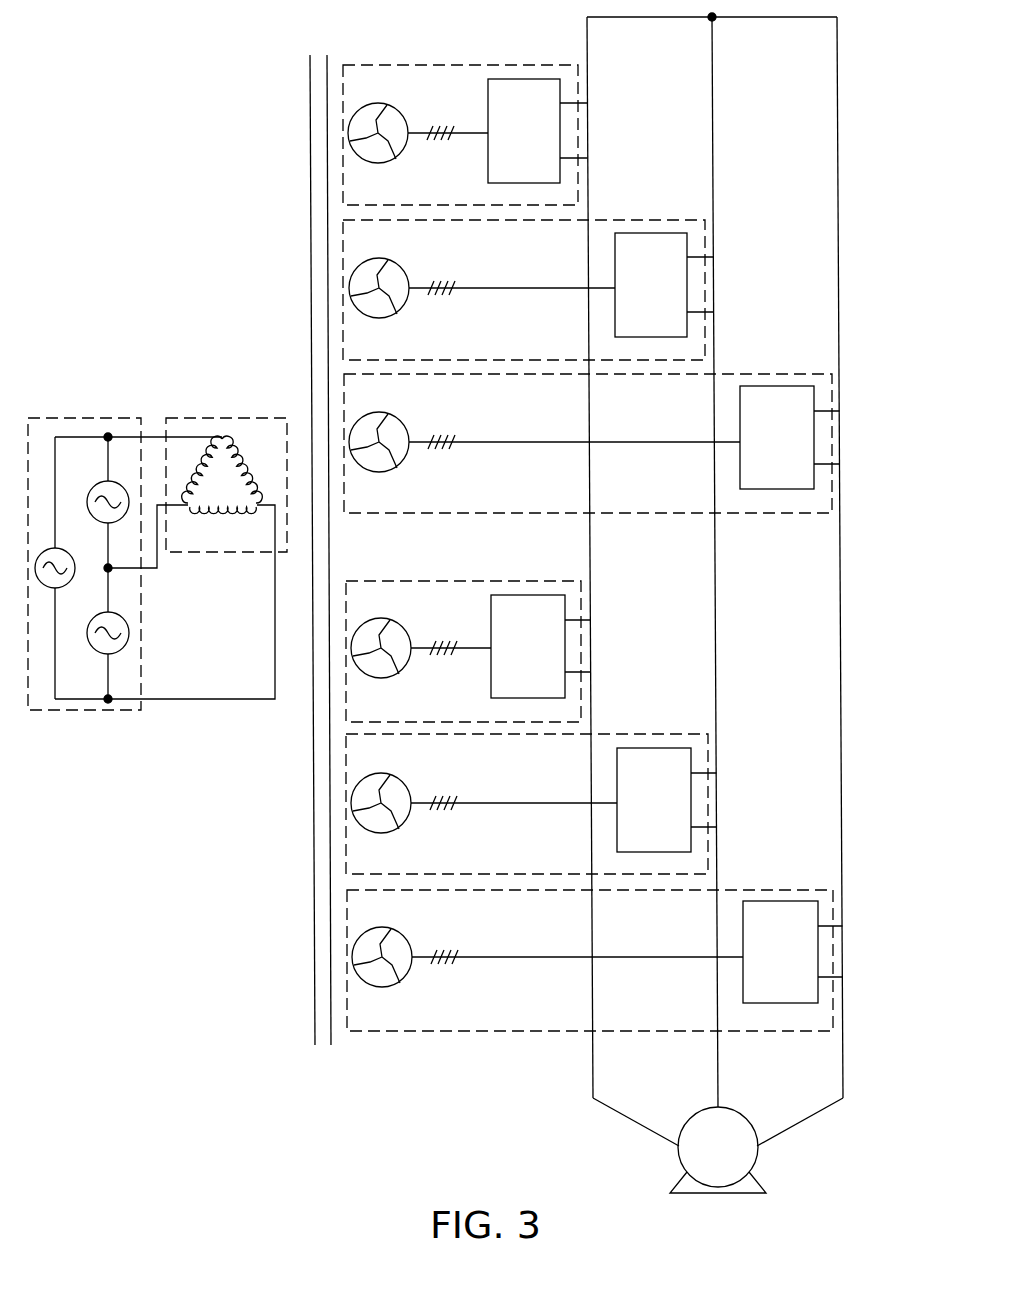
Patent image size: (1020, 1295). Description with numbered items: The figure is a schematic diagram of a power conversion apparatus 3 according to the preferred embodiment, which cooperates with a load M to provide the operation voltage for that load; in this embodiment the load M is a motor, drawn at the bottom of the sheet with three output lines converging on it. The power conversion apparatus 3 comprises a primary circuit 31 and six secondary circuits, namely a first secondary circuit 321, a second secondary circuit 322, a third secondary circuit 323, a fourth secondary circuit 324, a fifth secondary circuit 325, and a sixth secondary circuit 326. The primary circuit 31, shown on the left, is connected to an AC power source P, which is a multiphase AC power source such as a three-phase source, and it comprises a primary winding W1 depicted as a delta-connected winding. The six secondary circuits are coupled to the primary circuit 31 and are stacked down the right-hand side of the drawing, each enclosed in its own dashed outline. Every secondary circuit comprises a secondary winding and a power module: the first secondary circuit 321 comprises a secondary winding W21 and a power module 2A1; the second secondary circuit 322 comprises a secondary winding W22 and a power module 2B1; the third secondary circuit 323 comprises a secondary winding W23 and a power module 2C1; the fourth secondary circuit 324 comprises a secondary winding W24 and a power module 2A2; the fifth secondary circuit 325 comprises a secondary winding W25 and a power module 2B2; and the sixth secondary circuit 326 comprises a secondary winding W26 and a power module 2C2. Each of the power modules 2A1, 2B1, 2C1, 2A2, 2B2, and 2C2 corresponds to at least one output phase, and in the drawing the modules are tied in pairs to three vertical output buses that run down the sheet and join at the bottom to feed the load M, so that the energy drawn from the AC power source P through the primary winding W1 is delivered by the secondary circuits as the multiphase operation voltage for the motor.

The power conversion apparatus 3 is at (174, 96).
The AC power source P is at (110, 415).
The primary circuit 31 is at (269, 415).
The primary winding W1 is at (223, 530).
The first secondary circuit 321 is at (578, 138).
The second secondary circuit 322 is at (705, 287).
The third secondary circuit 323 is at (832, 440).
The fourth secondary circuit 324 is at (582, 650).
The fifth secondary circuit 325 is at (708, 798).
The sixth secondary circuit 326 is at (833, 953).
The secondary winding W21 is at (418, 118).
The secondary winding W22 is at (482, 273).
The secondary winding W23 is at (544, 427).
The secondary winding W24 is at (421, 633).
The secondary winding W25 is at (484, 788).
The secondary winding W26 is at (547, 942).
The power module 2A1 is at (538, 131).
The power module 2B1 is at (664, 285).
The power module 2C1 is at (790, 437).
The power module 2A2 is at (541, 646).
The power module 2B2 is at (667, 800).
The power module 2C2 is at (793, 952).
The load M is at (718, 1150).